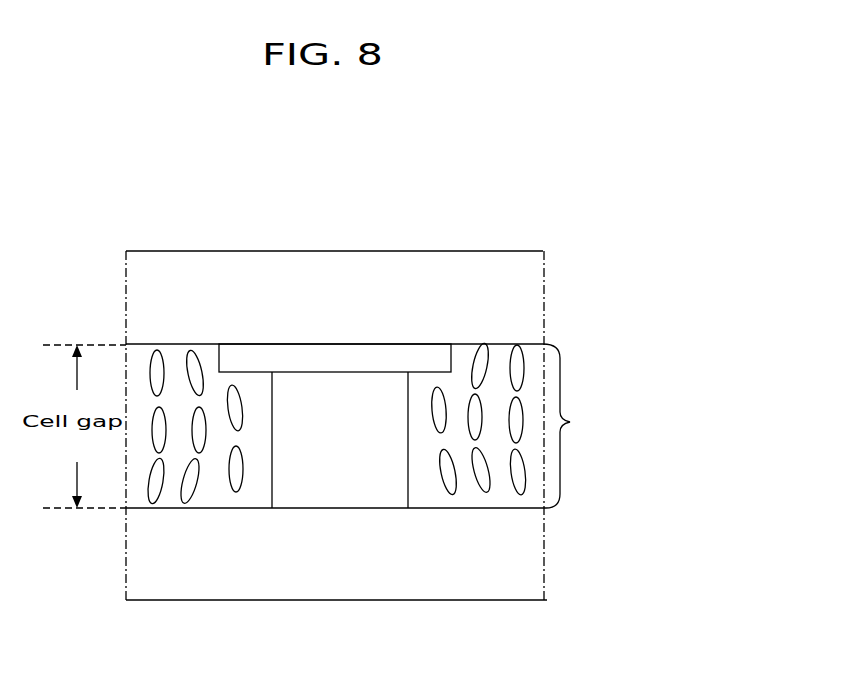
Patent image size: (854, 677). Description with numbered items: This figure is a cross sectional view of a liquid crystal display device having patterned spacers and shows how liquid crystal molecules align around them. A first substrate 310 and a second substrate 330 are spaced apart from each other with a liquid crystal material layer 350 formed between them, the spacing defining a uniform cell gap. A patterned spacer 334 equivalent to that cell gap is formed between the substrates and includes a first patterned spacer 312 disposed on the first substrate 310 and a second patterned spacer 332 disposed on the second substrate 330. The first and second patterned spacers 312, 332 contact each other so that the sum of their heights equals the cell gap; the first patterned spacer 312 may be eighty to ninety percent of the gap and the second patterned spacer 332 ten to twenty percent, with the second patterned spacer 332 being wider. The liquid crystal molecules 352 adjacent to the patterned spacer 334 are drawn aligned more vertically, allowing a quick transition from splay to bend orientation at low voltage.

The first substrate 310 is at (527, 550).
The first patterned spacer 312 is at (357, 392).
The second substrate 330 is at (523, 298).
The second patterned spacer 332 is at (265, 358).
The patterned spacer 334 is at (378, 190).
The liquid crystal material layer 350 is at (382, 426).
The liquid crystal molecules 352 is at (445, 487).